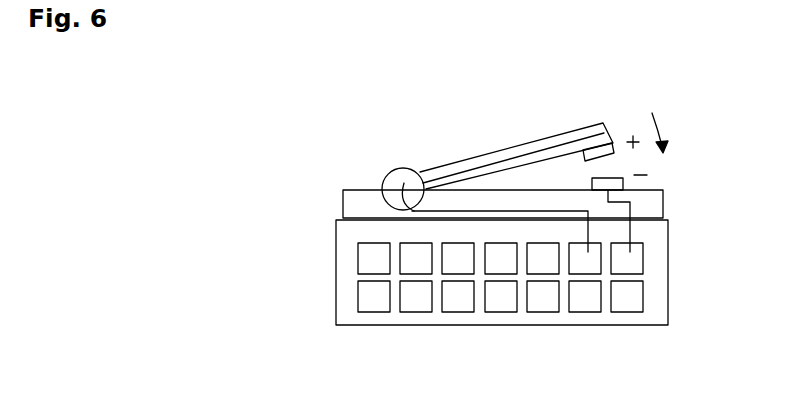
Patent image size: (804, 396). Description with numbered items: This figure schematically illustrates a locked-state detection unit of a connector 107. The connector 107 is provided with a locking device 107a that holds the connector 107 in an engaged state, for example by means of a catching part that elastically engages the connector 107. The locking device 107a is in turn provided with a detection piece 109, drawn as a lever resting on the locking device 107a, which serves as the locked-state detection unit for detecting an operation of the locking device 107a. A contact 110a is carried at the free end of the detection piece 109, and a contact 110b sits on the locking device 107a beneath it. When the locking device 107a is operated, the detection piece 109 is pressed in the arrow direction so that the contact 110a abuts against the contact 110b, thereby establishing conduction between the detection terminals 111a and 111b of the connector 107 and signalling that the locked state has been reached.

The connector 107 is at (668, 300).
The locking device 107a is at (343, 207).
The detection piece 109 is at (537, 138).
The contact 110a is at (613, 153).
The contact 110b is at (617, 178).
The detection terminal 111a is at (597, 267).
The detection terminal 111b is at (637, 263).